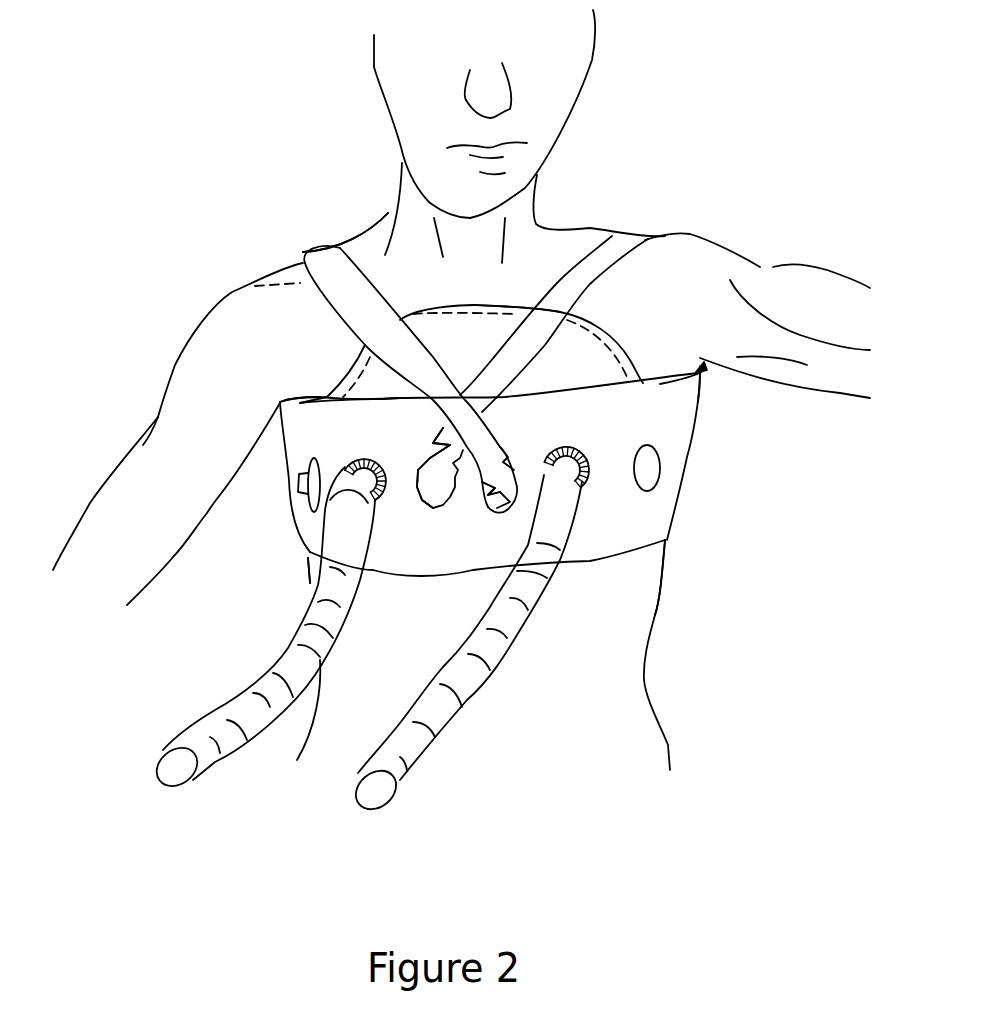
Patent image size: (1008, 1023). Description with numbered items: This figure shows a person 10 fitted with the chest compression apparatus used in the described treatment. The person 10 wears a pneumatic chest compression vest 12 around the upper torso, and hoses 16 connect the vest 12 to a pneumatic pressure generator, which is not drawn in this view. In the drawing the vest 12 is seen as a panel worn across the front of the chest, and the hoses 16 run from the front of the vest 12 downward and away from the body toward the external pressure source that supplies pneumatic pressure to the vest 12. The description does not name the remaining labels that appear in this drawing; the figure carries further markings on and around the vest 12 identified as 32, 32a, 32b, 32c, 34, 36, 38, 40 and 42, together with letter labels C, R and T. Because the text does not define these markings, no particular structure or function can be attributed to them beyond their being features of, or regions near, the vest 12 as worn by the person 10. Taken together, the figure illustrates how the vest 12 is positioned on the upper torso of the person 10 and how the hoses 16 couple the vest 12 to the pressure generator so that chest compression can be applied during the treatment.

The person 10 is at (206, 292).
The pneumatic chest compression vest 12 is at (684, 500).
The hoses 16 is at (207, 713).
The chest panel 32 is at (587, 381).
The panel neck edge 32a is at (503, 302).
The panel side edge 32b is at (698, 400).
The panel side edge 32c is at (332, 393).
The fastener patch 34 is at (460, 569).
The inner garment liner 36 is at (633, 340).
The shoulder straps 38 is at (307, 252).
The hose connectors 40 is at (372, 462).
The hook and loop fasteners 42 is at (388, 468).
The chest C is at (390, 258).
The rib region R is at (307, 565).
The torso T is at (680, 577).